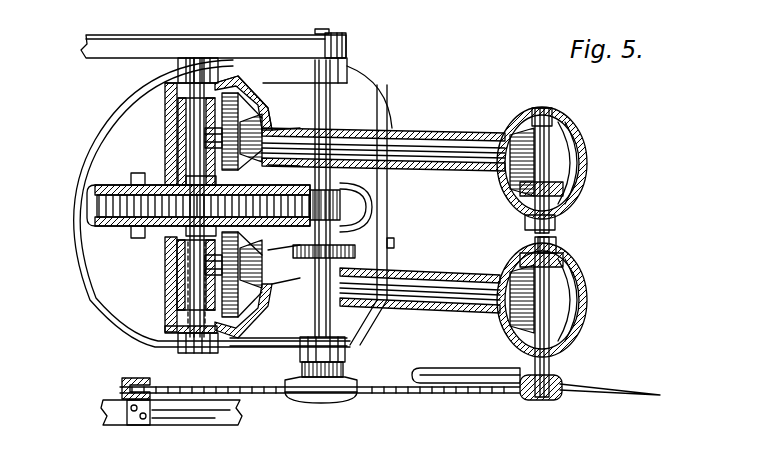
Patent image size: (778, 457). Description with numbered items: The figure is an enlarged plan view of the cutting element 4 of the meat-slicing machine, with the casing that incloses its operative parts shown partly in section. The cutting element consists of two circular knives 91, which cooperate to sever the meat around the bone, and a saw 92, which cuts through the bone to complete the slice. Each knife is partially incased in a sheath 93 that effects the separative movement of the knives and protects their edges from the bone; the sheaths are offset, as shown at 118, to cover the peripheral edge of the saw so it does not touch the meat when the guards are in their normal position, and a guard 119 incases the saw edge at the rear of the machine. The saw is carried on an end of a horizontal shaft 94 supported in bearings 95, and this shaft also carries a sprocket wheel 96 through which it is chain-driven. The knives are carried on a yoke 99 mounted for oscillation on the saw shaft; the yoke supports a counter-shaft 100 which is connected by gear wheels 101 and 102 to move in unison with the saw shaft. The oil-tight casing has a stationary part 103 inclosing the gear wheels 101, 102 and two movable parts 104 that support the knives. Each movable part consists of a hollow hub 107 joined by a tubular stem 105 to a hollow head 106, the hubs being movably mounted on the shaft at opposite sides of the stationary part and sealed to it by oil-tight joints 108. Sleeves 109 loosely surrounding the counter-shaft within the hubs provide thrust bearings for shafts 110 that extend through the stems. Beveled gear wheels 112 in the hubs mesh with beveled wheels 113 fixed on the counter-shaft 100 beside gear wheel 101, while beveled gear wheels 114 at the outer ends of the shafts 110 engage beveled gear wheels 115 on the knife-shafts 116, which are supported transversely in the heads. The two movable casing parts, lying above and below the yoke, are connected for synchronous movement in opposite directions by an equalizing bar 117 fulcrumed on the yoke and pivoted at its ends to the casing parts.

The gear unit 4 is at (82, 273).
The circular knife 91 is at (638, 387).
The saw 92 is at (245, 389).
The sheath 93 is at (424, 369).
The horizontal shaft 94 is at (362, 328).
The bearing 95 is at (248, 34).
The sprocket wheel 96 is at (293, 249).
The yoke 99 is at (364, 96).
The counter-shaft 100 is at (189, 138).
The gear wheel 101 is at (110, 226).
The gear wheel 102 is at (358, 203).
The stationary casing part 103 is at (358, 224).
The movable casing part 104 is at (252, 118).
The tubular stem 105 is at (421, 137).
The hollow head 106 is at (583, 121).
The hollow hub 107 is at (250, 87).
The oil-tight joint 108 is at (173, 170).
The sleeve 109 is at (186, 285).
The shaft 110 is at (447, 168).
The beveled gear wheel 112 is at (248, 108).
The beveled gear wheel 113 is at (252, 190).
The beveled gear wheel 114 is at (518, 114).
The beveled gear wheel 115 is at (590, 178).
The knife-shaft 116 is at (585, 138).
The equalizing bar 117 is at (394, 258).
The offset 118 is at (521, 400).
The guard 119 is at (120, 382).